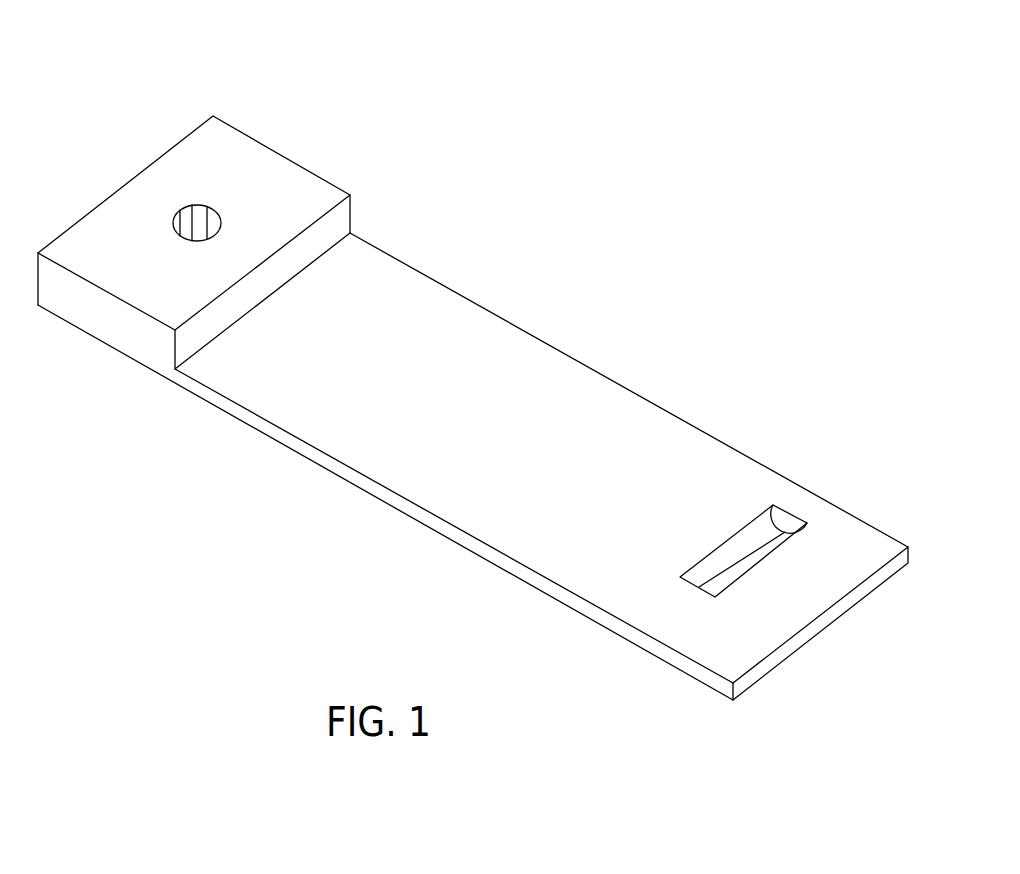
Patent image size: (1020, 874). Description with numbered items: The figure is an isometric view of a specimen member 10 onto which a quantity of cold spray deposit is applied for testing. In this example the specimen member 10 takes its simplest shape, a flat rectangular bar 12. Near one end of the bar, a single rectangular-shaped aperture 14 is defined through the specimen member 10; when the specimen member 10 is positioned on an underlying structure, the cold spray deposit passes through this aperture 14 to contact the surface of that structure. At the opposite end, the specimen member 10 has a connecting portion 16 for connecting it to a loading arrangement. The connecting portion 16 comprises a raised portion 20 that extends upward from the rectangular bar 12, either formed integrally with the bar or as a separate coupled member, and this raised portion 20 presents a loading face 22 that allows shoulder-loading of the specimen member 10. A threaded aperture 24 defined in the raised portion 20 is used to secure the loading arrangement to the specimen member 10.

The specimen member 10 is at (473, 351).
The flat rectangular bar 12 is at (473, 466).
The aperture 14 is at (793, 503).
The connecting portion 16 is at (227, 185).
The raised portion 20 is at (282, 152).
The loading face 22 is at (339, 223).
The threaded aperture 24 is at (192, 207).